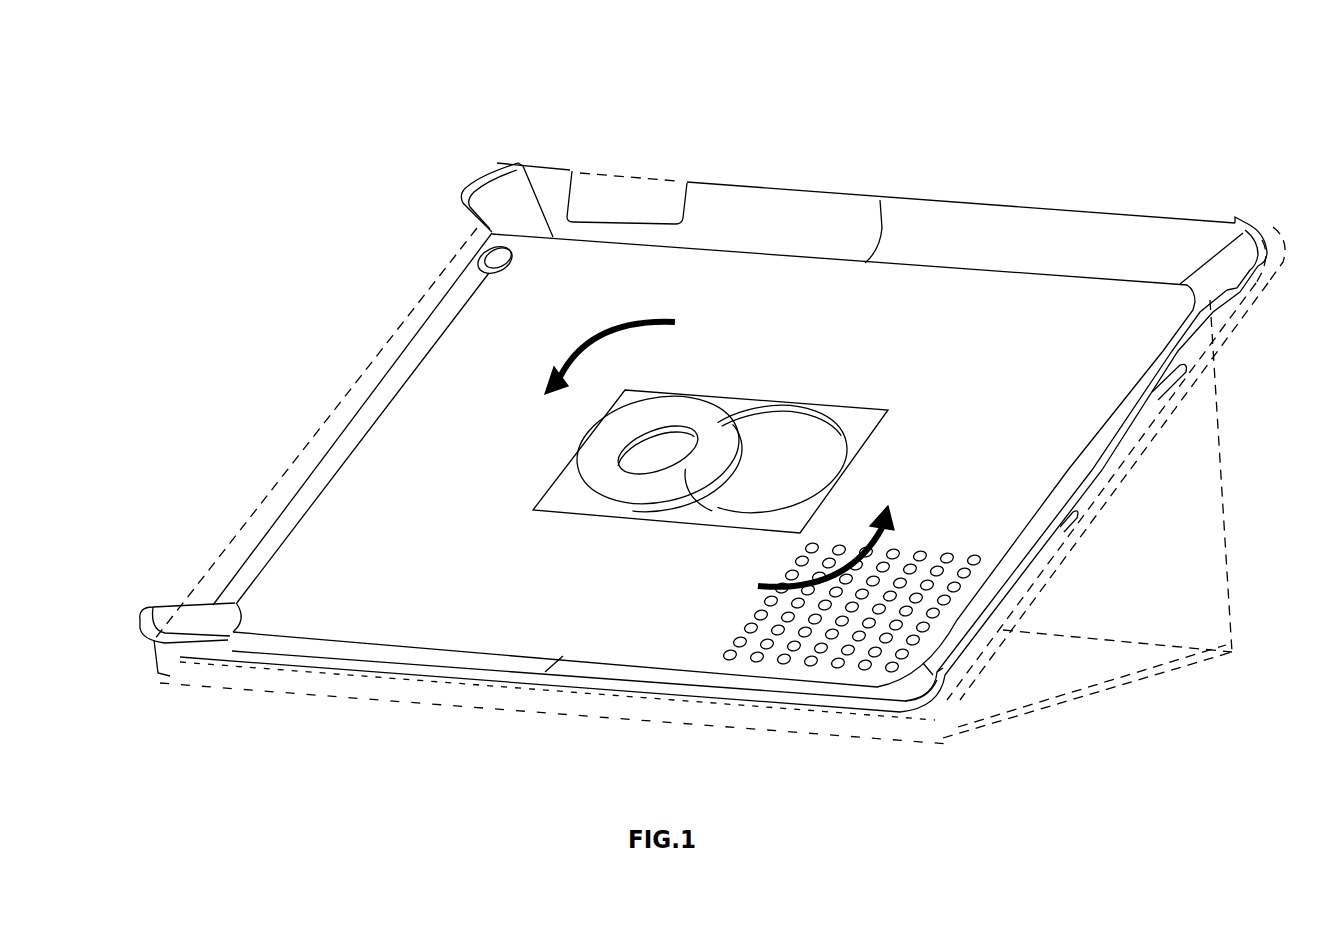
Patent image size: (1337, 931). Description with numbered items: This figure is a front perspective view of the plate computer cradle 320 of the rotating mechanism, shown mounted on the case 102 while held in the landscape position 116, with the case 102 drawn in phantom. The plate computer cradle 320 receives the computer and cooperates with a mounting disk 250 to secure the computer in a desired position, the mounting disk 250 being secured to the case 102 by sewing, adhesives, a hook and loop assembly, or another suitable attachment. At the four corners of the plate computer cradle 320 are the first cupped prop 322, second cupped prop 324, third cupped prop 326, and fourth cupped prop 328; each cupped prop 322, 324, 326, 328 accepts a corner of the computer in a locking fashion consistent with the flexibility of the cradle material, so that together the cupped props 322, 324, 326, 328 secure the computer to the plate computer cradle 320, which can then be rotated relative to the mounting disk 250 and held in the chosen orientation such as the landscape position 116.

The landscape position 116 is at (703, 423).
The plate computer cradle 320 is at (1061, 156).
The first cupped prop 322 is at (484, 183).
The second cupped prop 324 is at (1247, 224).
The third cupped prop 326 is at (160, 644).
The fourth cupped prop 328 is at (913, 697).
The mounting disk 250 is at (698, 383).
The case 102 is at (1222, 486).